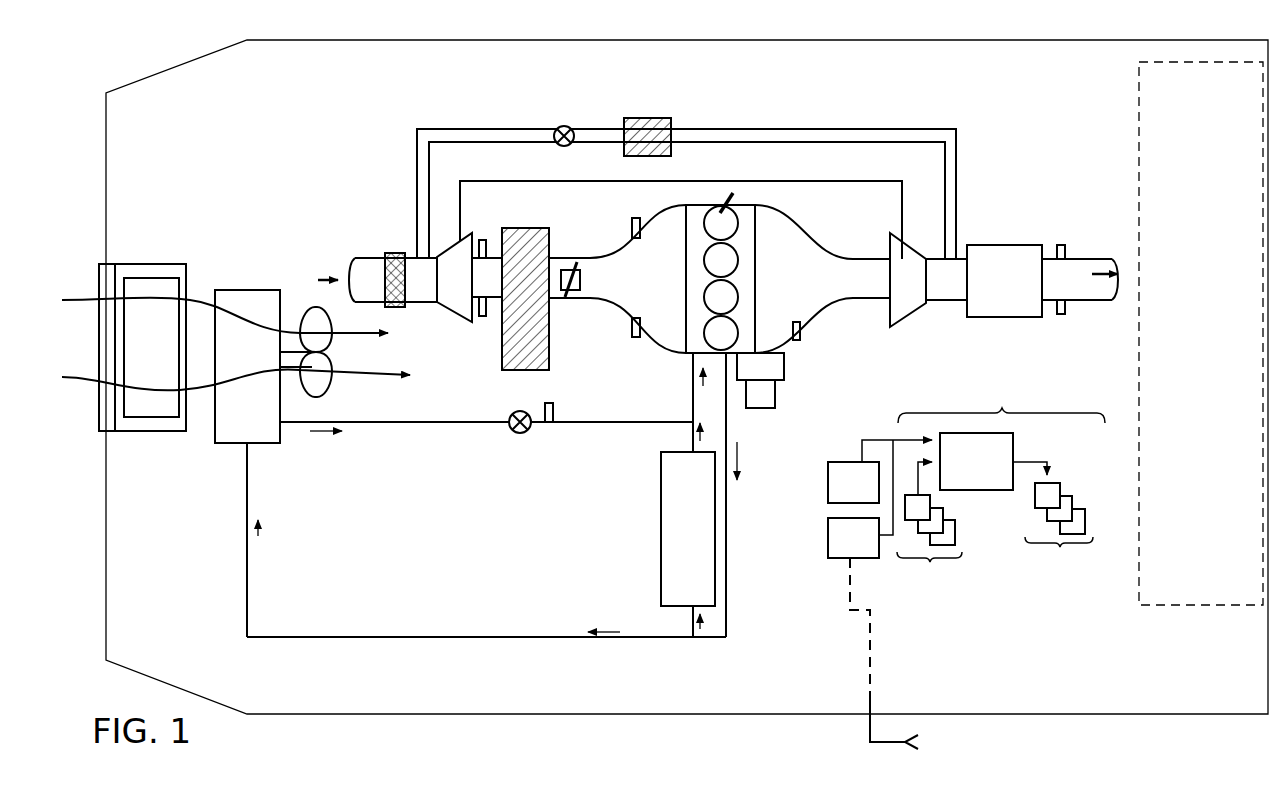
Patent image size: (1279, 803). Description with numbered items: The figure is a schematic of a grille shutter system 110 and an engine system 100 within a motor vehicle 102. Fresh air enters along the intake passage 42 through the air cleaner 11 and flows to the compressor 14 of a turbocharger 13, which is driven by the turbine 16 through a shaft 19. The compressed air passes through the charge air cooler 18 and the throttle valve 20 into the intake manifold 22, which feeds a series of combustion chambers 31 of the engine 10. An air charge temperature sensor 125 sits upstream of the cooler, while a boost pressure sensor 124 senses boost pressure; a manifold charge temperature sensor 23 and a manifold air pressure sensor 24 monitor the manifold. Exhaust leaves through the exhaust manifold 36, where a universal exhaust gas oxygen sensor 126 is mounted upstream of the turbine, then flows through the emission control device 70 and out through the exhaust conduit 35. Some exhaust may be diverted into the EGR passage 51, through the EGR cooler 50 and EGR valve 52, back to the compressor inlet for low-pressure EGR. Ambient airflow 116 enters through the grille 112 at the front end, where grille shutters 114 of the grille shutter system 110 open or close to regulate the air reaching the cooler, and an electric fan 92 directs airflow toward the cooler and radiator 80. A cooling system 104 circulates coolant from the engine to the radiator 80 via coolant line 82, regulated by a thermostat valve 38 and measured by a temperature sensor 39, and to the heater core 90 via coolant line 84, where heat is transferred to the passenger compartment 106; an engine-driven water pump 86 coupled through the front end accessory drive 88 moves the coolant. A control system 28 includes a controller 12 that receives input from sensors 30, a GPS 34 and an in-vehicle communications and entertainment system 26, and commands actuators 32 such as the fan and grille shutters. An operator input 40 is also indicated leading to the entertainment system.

The engine system 100 is at (1034, 88).
The motor vehicle 102 is at (660, 40).
The cooling system 104 is at (729, 660).
The passenger compartment 106 is at (1201, 333).
The engine 10 is at (757, 278).
The air cleaner 11 is at (393, 253).
The controller 12 is at (987, 474).
The turbocharger 13 is at (494, 173).
The compressor 14 is at (469, 292).
The turbine 16 is at (920, 292).
The charge air cooler 18 is at (527, 228).
The shaft 19 is at (835, 181).
The throttle valve 20 is at (580, 284).
The intake manifold 22 is at (667, 292).
The manifold charge temperature sensor 23 is at (634, 232).
The manifold air pressure sensor 24 is at (634, 325).
The in-vehicle communications and entertainment system 26 is at (863, 551).
The control system 28 is at (1001, 397).
The sensors 30 is at (926, 535).
The combustion chambers 31 is at (731, 226).
The actuators 32 is at (1054, 524).
The GPS 34 is at (863, 495).
The exhaust conduit 35 is at (1098, 259).
The exhaust manifold 36 is at (817, 292).
The thermostat valve 38 is at (523, 433).
The temperature sensor 39 is at (549, 403).
The pedal / operator input 40 is at (925, 751).
The intake passage 42 is at (380, 308).
The EGR cooler 50 is at (656, 118).
The EGR passage 51 is at (748, 129).
The EGR valve 52 is at (572, 127).
The emission control device 70 is at (992, 245).
The radiator 80 is at (263, 366).
The coolant line 82 is at (616, 422).
The coolant line 84 is at (693, 448).
The engine-driven water pump 86 is at (775, 415).
The front end accessory drive 88 is at (784, 378).
The heater core 90 is at (688, 529).
The electric fan 92 is at (325, 386).
The grille shutter system 110 is at (143, 431).
The grille 112 is at (99, 420).
The grille shutters 114 is at (168, 359).
The ambient airflow 116 is at (72, 300).
The boost pressure sensor 124 is at (486, 316).
The air charge temperature sensor 125 is at (482, 240).
The universal exhaust gas oxygen sensor 126 is at (798, 340).